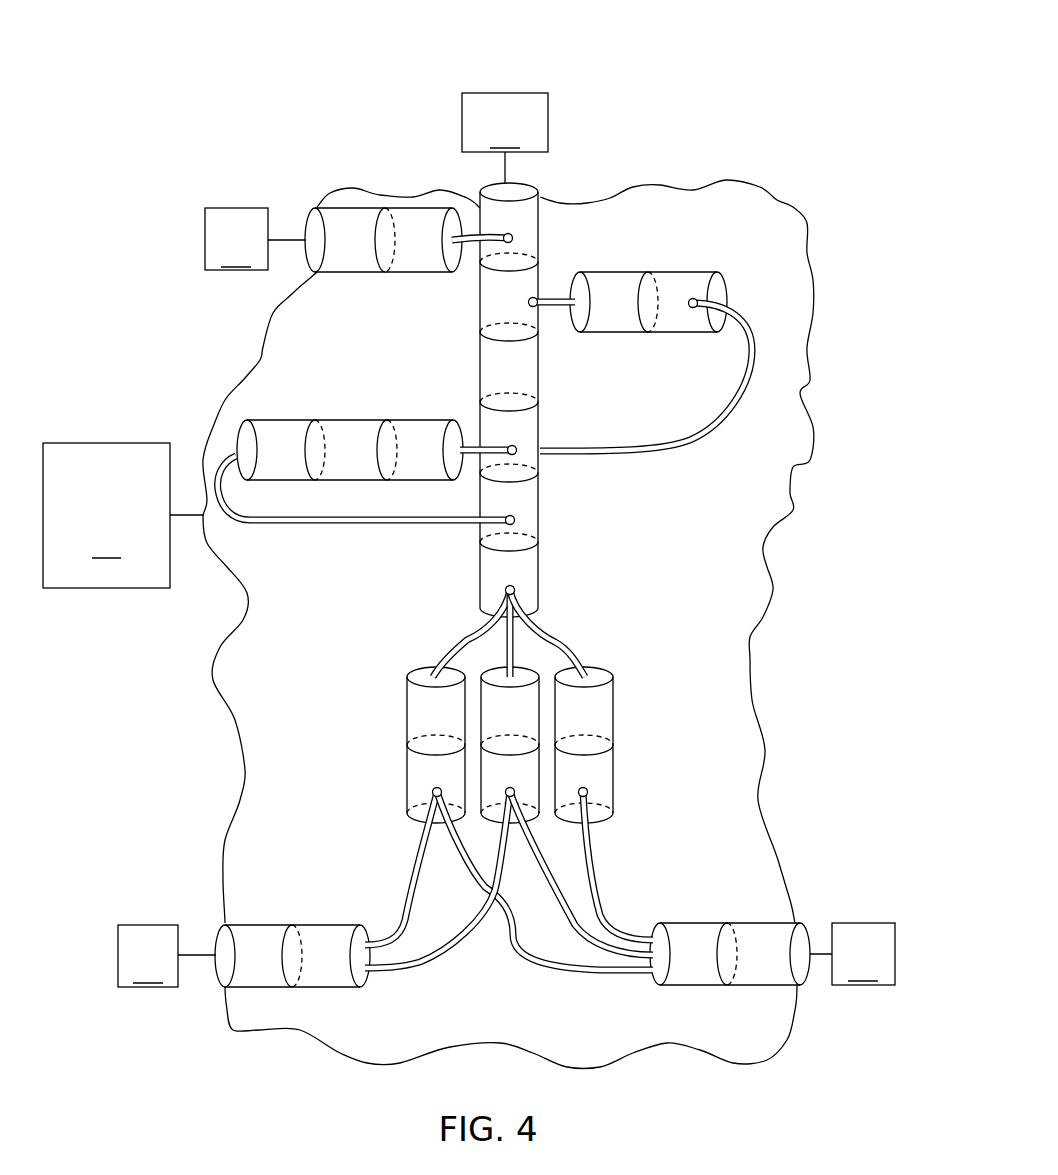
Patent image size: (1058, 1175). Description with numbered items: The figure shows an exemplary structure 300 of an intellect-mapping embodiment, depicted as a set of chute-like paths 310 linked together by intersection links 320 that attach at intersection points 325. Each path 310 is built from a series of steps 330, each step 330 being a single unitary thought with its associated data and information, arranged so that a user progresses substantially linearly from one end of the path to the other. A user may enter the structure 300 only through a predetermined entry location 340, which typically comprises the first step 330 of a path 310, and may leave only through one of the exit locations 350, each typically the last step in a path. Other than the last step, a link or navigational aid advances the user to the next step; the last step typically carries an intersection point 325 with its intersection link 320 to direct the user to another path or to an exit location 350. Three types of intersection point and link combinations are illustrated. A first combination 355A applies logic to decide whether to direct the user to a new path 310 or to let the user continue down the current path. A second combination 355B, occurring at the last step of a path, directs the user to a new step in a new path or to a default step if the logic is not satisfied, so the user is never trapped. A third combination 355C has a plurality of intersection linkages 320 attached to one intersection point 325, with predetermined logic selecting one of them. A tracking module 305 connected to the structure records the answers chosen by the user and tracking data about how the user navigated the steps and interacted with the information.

The structure 300 is at (279, 69).
The tracking module 305 is at (123, 515).
The path 310 is at (455, 282).
The intersection link 320 is at (468, 250).
The intersection point 325 is at (513, 234).
The step 330 is at (600, 277).
The entry location 340 is at (505, 138).
The exit location 350 is at (506, 597).
The first combination 355A is at (470, 205).
The second combination 355B is at (750, 405).
The third combination 355C is at (566, 602).